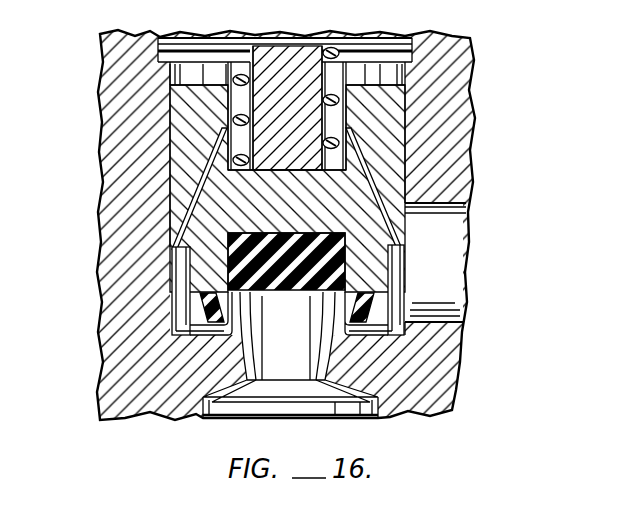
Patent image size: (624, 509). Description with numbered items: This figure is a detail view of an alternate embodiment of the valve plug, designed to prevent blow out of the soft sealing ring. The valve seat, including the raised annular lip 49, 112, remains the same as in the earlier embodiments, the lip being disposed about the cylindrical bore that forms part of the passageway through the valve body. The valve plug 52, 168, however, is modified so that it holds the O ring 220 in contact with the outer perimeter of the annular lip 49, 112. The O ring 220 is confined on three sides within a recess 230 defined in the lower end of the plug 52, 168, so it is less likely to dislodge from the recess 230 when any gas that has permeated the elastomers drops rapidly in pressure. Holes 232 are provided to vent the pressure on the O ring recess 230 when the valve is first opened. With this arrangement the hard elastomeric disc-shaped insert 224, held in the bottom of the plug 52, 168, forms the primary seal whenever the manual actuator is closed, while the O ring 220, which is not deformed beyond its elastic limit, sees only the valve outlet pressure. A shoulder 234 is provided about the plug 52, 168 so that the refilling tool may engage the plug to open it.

The valve plug 52 is at (332, 225).
The valve plug 168 is at (393, 153).
The shoulder 234 is at (402, 252).
The recess 230 is at (368, 290).
The holes 232 is at (407, 285).
The disc-shaped insert 224 is at (173, 259).
The O ring 220 is at (173, 328).
The raised annular lip 49 is at (254, 371).
The raised annular lip 112 is at (243, 330).